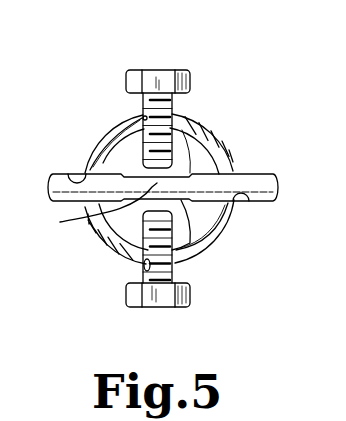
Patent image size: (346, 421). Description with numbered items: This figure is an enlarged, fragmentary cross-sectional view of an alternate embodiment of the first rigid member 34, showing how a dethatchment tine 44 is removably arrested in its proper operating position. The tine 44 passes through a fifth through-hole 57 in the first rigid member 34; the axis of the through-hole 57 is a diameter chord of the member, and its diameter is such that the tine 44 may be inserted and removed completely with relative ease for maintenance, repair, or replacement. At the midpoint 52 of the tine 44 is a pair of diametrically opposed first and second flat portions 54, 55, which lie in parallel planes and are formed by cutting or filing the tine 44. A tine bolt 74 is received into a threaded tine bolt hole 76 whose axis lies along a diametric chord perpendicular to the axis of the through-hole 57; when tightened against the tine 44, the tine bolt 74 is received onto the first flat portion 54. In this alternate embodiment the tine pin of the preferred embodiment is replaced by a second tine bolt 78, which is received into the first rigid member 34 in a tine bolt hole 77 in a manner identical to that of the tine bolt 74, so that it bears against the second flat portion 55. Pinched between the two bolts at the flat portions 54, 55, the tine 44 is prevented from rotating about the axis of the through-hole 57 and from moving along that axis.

The first rigid member 34 is at (112, 248).
The dethatchment tine 44 is at (270, 175).
The midpoint 52 is at (99, 208).
The first flat portion 54 is at (217, 134).
The second flat portion 55 is at (199, 248).
The fifth through-holes 57 is at (68, 175).
The tine bolt 74 is at (157, 70).
The tine bolt hole 76 is at (143, 117).
The tine bolt hole 77 is at (147, 273).
The second tine bolt 78 is at (185, 306).